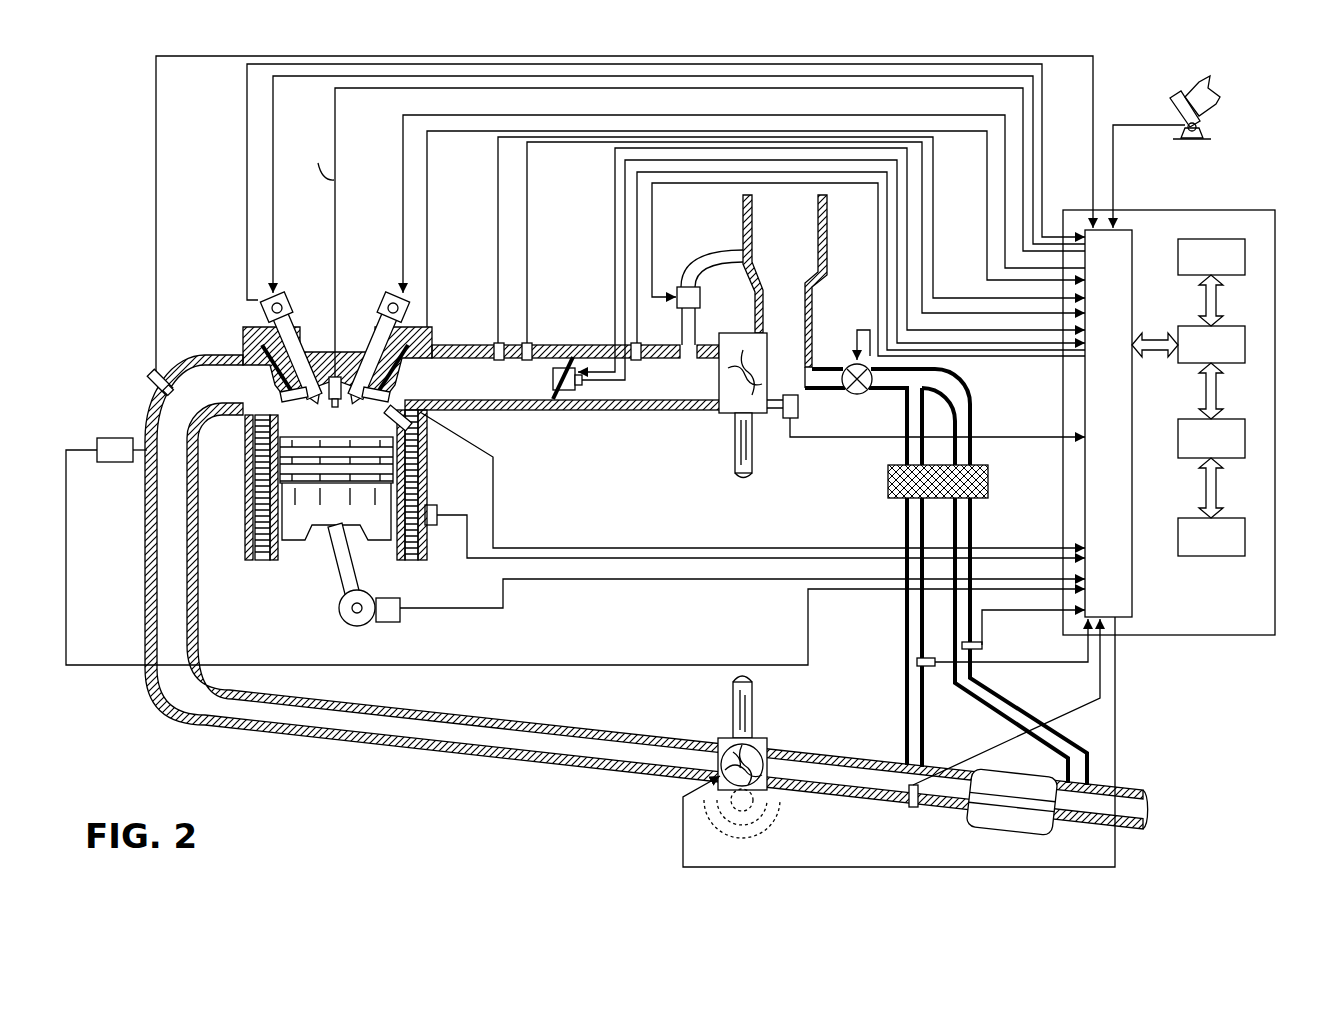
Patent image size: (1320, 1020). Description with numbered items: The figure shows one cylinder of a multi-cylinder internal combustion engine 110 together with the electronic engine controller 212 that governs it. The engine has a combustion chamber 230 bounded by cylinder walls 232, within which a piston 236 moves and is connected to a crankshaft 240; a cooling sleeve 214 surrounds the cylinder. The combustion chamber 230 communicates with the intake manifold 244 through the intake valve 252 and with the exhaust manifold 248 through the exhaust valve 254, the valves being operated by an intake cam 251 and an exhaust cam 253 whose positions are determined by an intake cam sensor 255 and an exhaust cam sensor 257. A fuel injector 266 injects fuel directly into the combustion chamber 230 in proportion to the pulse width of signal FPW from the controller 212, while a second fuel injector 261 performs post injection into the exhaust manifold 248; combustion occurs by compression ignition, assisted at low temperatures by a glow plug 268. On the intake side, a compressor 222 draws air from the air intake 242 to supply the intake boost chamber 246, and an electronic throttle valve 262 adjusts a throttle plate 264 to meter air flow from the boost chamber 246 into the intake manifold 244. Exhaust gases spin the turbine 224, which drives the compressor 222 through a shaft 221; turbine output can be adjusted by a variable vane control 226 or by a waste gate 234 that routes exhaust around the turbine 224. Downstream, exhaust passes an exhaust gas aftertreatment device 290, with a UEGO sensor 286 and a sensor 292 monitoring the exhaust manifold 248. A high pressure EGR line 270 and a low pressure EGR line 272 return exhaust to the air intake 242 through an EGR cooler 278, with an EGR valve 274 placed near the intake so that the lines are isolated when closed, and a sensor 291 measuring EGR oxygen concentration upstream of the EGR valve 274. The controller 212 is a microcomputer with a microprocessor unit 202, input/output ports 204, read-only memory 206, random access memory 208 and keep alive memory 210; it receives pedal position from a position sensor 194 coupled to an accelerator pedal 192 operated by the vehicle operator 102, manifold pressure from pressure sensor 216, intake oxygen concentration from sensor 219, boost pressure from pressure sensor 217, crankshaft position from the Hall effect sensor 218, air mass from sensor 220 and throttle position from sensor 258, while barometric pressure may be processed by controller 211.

The internal combustion engine 110 is at (118, 168).
The vehicle operator 102 is at (1222, 97).
The accelerator pedal 192 is at (1172, 105).
The position sensor 194 is at (1205, 132).
The input/output ports 204 is at (1132, 235).
The electronic engine controller 212 is at (1240, 210).
The read-only memory 206 is at (1245, 255).
The microprocessor unit 202 is at (1245, 345).
The random access memory 208 is at (1245, 440).
The keep alive memory 210 is at (1245, 536).
The controller 211 is at (436, 512).
The cooling sleeve 214 is at (418, 552).
The pressure sensor 216 is at (526, 340).
The pressure sensor 217 is at (657, 332).
The Hall effect sensor 218 is at (382, 624).
The sensor 219 is at (497, 340).
The sensor 220 is at (796, 412).
The shaft 221 is at (735, 455).
The compressor 222 is at (715, 415).
The turbine 224 is at (768, 742).
The variable vane control 226 is at (683, 797).
The combustion chamber 230 is at (298, 445).
The cylinder walls 232 is at (282, 560).
The waste gate 234 is at (745, 812).
The piston 236 is at (325, 512).
The crankshaft 240 is at (347, 628).
The air intake 242 is at (800, 291).
The intake manifold 244 is at (562, 377).
The intake boost chamber 246 is at (679, 368).
The exhaust manifold 248 is at (646, 592).
The intake cam 251 is at (392, 300).
The intake valve 252 is at (385, 395).
The exhaust cam 253 is at (278, 300).
The exhaust valve 254 is at (272, 368).
The intake cam sensor 255 is at (408, 316).
The exhaust cam sensor 257 is at (265, 313).
The sensor 258 is at (683, 287).
The second fuel injector 261 is at (152, 375).
The electronic throttle valve 262 is at (562, 365).
The throttle plate 264 is at (566, 360).
The fuel injector 266 is at (330, 372).
The glow plug 268 is at (425, 428).
The high pressure EGR line 270 is at (905, 530).
The low pressure EGR line 272 is at (972, 528).
The EGR valve 274 is at (860, 394).
The exhaust-gas recirculation cooler 278 is at (990, 472).
The UEGO sensor 286 is at (110, 438).
The exhaust gas aftertreatment device 290 is at (985, 832).
The sensor 291 is at (917, 662).
The sensor 292 is at (910, 808).